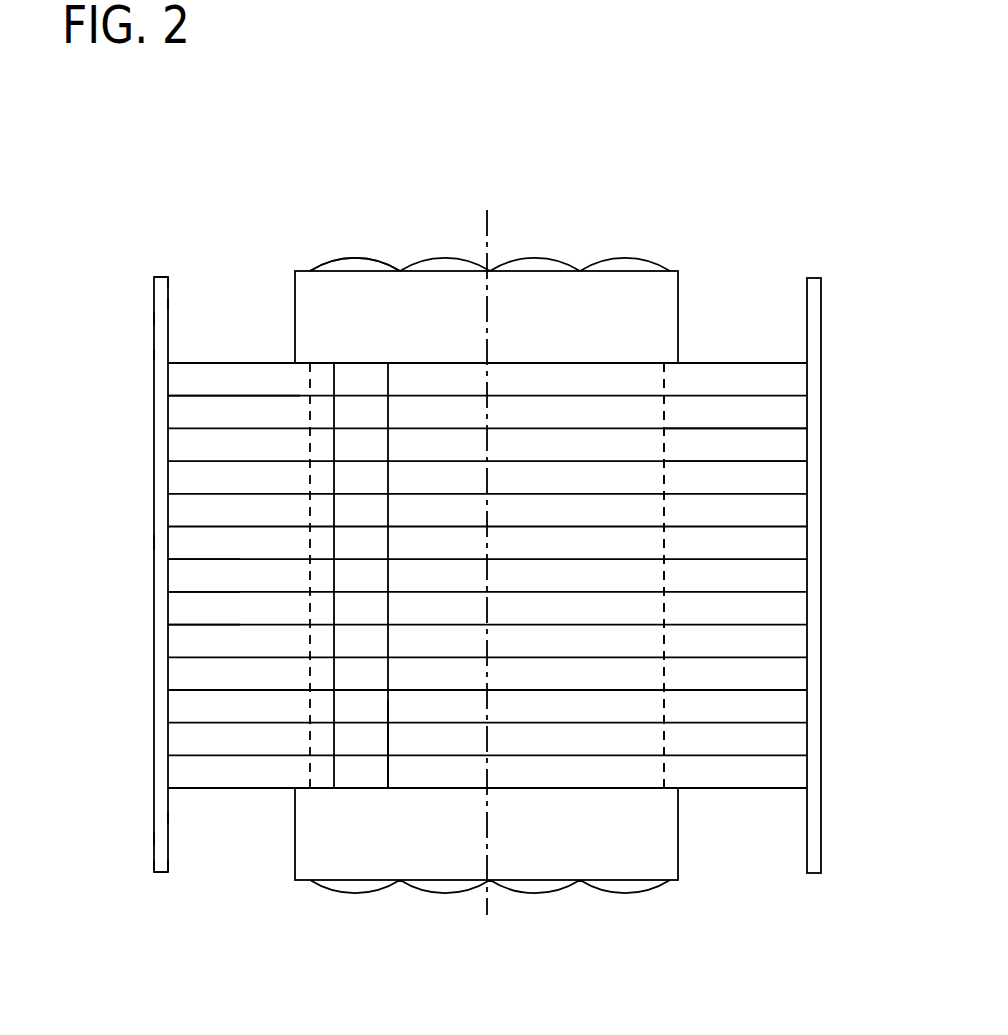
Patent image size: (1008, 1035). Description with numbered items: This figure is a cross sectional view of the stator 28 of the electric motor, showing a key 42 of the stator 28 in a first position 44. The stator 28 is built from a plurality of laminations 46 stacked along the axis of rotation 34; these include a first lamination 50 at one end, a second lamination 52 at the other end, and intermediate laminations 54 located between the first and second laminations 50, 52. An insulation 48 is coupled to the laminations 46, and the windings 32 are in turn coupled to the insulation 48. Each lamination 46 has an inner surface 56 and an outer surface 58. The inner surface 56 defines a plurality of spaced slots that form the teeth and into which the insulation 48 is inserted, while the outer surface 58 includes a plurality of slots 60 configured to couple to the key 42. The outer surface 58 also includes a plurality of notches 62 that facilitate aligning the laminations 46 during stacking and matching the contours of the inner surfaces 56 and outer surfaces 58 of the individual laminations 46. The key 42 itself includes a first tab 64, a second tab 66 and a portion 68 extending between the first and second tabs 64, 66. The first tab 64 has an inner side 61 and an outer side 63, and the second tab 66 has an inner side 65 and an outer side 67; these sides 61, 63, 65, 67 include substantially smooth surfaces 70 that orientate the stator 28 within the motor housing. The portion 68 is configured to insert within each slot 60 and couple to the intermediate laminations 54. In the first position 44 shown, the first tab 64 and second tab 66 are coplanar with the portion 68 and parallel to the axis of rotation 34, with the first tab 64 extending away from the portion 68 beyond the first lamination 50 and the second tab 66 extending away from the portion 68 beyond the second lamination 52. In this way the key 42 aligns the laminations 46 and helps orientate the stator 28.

The stator 28 is at (734, 176).
The windings 32 is at (352, 262).
The axis of rotation 34 is at (490, 233).
The key 42 is at (145, 480).
The first position 44 is at (133, 313).
The laminations 46 is at (215, 552).
The insulation 48 is at (296, 283).
The first lamination 50 is at (265, 768).
The second lamination 52 is at (242, 388).
The intermediate laminations 54 is at (231, 613).
The inner surface 56 is at (633, 412).
The outer surface 58 is at (692, 450).
The slots 60 is at (807, 523).
The inner side 61 is at (170, 872).
The notches 62 is at (388, 768).
The outer side 63 is at (154, 838).
The first tab 64 is at (160, 872).
The inner side 65 is at (170, 287).
The second tab 66 is at (153, 318).
The outer side 67 is at (154, 283).
The portion 68 is at (160, 542).
The smooth surfaces 70 is at (169, 305).